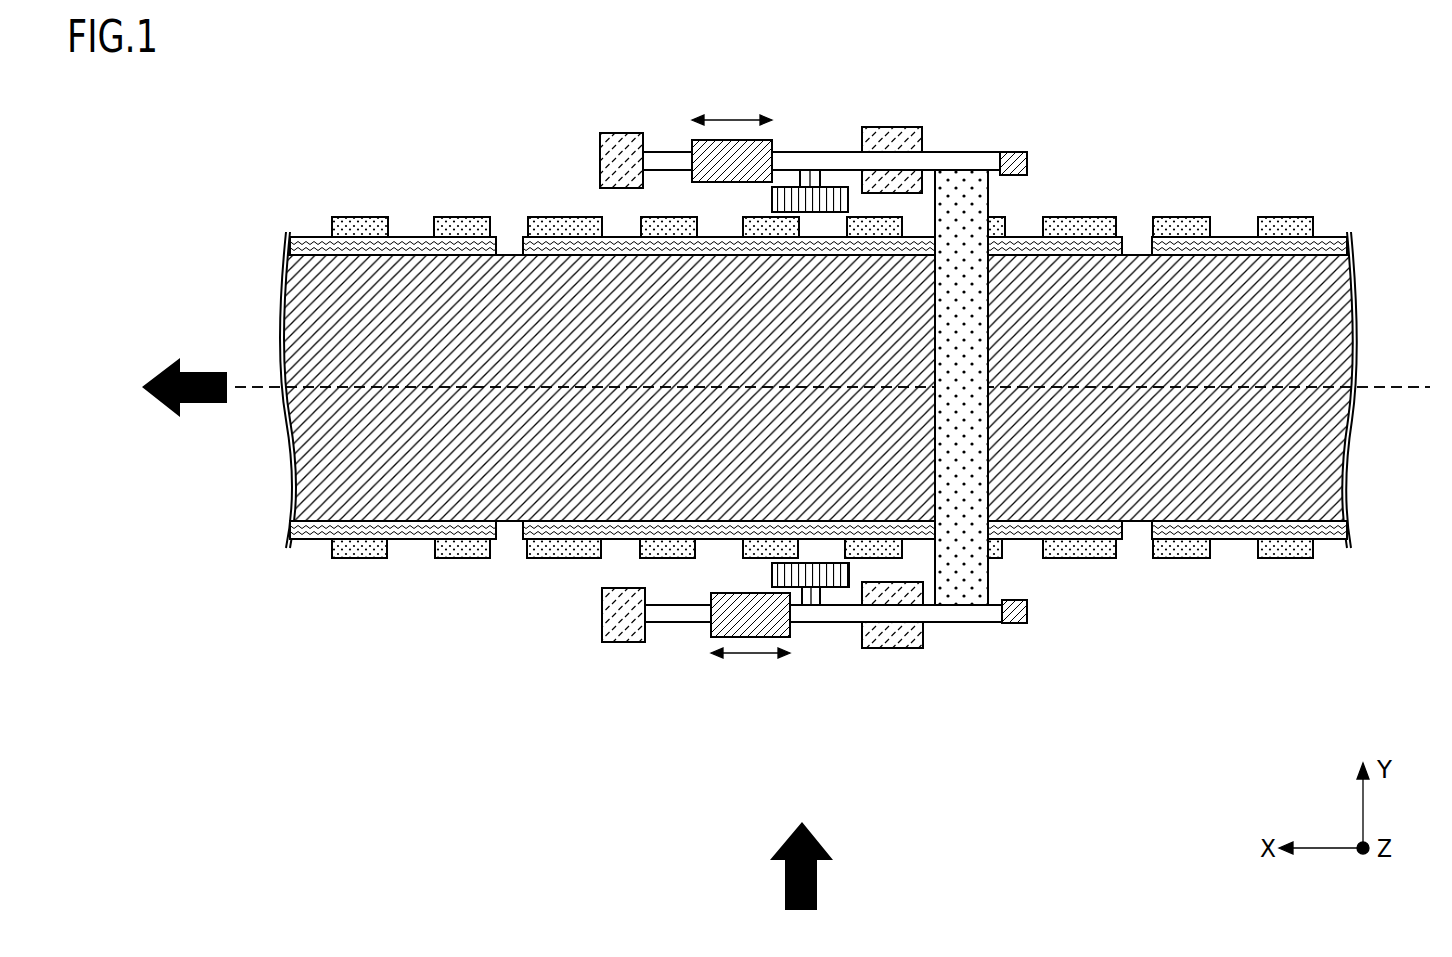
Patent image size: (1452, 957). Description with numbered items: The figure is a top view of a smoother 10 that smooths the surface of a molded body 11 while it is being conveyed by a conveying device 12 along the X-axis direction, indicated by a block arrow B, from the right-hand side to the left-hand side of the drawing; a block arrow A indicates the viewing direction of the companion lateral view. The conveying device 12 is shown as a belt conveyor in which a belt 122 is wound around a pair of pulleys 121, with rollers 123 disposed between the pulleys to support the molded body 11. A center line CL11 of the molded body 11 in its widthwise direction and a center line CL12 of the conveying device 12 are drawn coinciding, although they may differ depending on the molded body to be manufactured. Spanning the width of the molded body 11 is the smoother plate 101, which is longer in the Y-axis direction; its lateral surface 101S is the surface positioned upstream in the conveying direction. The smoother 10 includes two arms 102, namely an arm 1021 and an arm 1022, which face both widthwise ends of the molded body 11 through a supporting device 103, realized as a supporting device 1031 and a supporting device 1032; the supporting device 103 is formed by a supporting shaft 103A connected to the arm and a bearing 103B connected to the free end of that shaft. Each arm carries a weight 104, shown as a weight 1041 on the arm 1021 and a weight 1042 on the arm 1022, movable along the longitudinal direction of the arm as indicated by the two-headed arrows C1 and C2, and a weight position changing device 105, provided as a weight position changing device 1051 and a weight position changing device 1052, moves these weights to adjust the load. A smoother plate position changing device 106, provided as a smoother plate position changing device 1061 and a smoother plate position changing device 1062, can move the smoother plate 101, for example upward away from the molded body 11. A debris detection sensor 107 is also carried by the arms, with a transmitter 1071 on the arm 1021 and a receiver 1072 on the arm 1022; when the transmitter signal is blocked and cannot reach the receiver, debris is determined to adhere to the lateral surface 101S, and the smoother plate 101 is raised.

The smoother 10 is at (800, 121).
The molded body 11 is at (304, 262).
The conveying device 12 is at (818, 352).
The pulleys 121 is at (548, 223).
The belt 122 is at (1117, 244).
The rollers 123 is at (672, 223).
The smoother plate 101 is at (983, 191).
The lateral surface of the smoother plate 101S is at (995, 471).
The arms 102 is at (875, 120).
The arm 1021 is at (967, 614).
The arm 1022 is at (968, 162).
The supporting device 103 is at (843, 121).
The supporting device 1031 is at (858, 705).
The supporting device 1032 is at (832, 196).
The supporting shaft 103A is at (812, 596).
The bearing 103B is at (838, 572).
The weight 104 is at (710, 106).
The weight 1041 is at (722, 630).
The weight 1042 is at (697, 140).
The weight position changing device 105 is at (546, 160).
The weight position changing device 1051 is at (617, 617).
The weight position changing device 1052 is at (617, 165).
The smoother plate position changing device 106 is at (958, 111).
The smoother plate position changing device 1061 is at (905, 634).
The smoother plate position changing device 1062 is at (893, 135).
The debris detection sensor 107 is at (1075, 143).
The transmitter 1071 is at (1015, 615).
The receiver 1072 is at (1015, 161).
The center line CL11 is at (1407, 386).
The center line CL12 is at (832, 351).
The block arrow A is at (805, 881).
The block arrow B is at (204, 386).
The two-headed arrow C1 is at (750, 670).
The two-headed arrow C2 is at (732, 107).